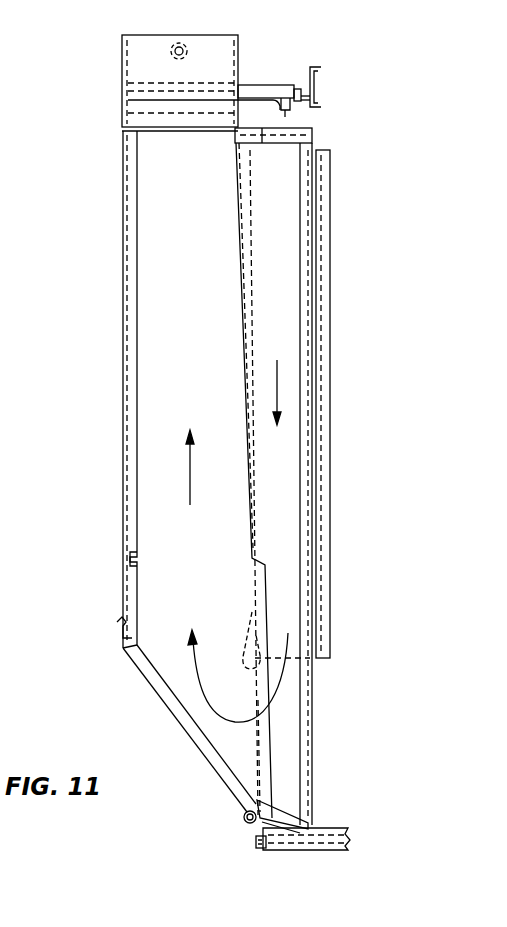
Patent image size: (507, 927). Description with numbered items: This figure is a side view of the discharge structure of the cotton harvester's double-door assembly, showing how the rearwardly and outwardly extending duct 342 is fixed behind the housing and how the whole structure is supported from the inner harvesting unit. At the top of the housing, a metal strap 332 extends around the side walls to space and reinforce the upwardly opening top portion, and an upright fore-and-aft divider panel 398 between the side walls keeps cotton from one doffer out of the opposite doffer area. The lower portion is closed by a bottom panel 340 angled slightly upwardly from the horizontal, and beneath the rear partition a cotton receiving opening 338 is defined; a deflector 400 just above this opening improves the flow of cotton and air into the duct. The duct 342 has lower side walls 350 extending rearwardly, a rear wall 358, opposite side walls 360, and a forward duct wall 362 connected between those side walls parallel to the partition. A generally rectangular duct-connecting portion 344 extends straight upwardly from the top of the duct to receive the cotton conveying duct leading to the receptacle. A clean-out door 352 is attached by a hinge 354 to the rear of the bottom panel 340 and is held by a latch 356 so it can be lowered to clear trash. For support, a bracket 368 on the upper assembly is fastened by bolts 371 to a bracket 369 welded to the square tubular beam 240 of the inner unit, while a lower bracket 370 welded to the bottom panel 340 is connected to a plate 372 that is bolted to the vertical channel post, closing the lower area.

The duct-connecting portion 344 is at (122, 73).
The bracket 368 is at (291, 70).
The square tubular beam 240 is at (318, 80).
The bolts 371 is at (285, 105).
The bracket 369 is at (298, 100).
The forward duct wall 362 is at (242, 212).
The metal strap 332 is at (312, 138).
The divider panel 398 is at (330, 332).
The duct 342 is at (115, 300).
The rear wall 358 is at (124, 339).
The side walls 360 is at (206, 330).
The lower side walls 350 is at (150, 580).
The deflector 400 is at (238, 640).
The latch 356 is at (112, 630).
The clean-out door 352 is at (174, 712).
The cotton receiving opening 338 is at (250, 747).
The hinge 354 is at (244, 816).
The lower bracket 370 is at (262, 826).
The bottom panel 340 is at (295, 826).
The plate 372 is at (322, 840).